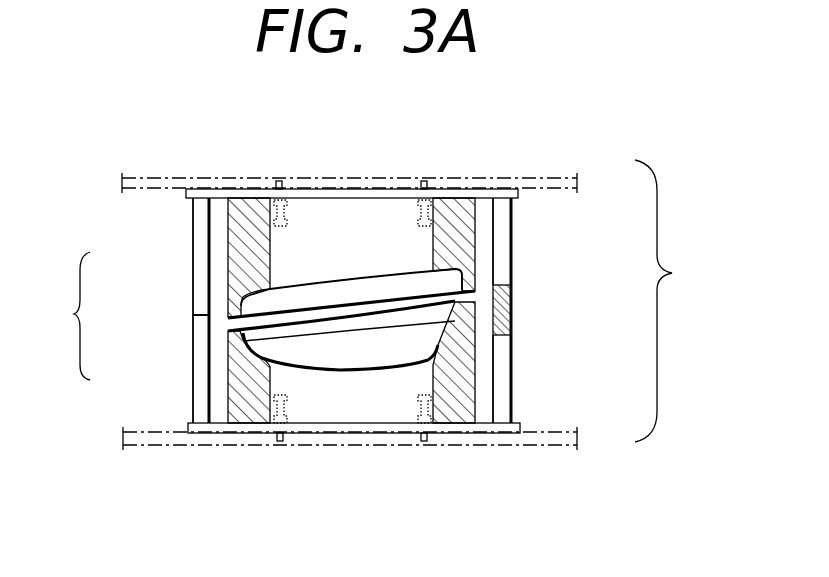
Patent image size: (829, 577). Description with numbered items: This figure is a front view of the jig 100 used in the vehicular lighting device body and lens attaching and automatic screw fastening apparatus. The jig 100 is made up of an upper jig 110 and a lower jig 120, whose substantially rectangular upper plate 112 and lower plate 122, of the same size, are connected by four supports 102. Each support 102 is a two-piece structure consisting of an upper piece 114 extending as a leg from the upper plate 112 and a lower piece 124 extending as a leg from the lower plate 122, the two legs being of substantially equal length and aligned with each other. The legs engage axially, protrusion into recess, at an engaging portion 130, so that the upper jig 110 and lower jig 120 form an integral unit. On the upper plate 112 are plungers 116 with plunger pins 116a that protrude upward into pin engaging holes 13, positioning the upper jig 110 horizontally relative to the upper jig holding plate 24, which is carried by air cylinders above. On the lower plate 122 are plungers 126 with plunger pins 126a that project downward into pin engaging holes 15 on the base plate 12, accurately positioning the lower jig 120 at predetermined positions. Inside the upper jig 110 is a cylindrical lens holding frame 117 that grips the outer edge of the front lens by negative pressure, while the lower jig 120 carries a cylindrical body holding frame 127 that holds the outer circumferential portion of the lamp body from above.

The base plate 12 is at (532, 443).
The pin engaging holes 13 is at (276, 179).
The pin engaging holes 15 is at (278, 443).
The upper jig holding plate 24 is at (531, 178).
The jig 100 is at (373, 314).
The supports 102 is at (314, 310).
The upper jig 110 is at (381, 199).
The upper plate 112 is at (195, 189).
The upper piece 114 is at (193, 270).
The plungers 116 is at (286, 220).
The plunger pins 116a is at (282, 181).
The lens holding frame 117 is at (228, 220).
The lower jig 120 is at (381, 424).
The lower plate 122 is at (202, 433).
The lower piece 124 is at (193, 358).
The plungers 126 is at (289, 403).
The plunger pins 126a is at (283, 441).
The body holding frame 127 is at (228, 410).
The engaging portion 130 is at (514, 303).